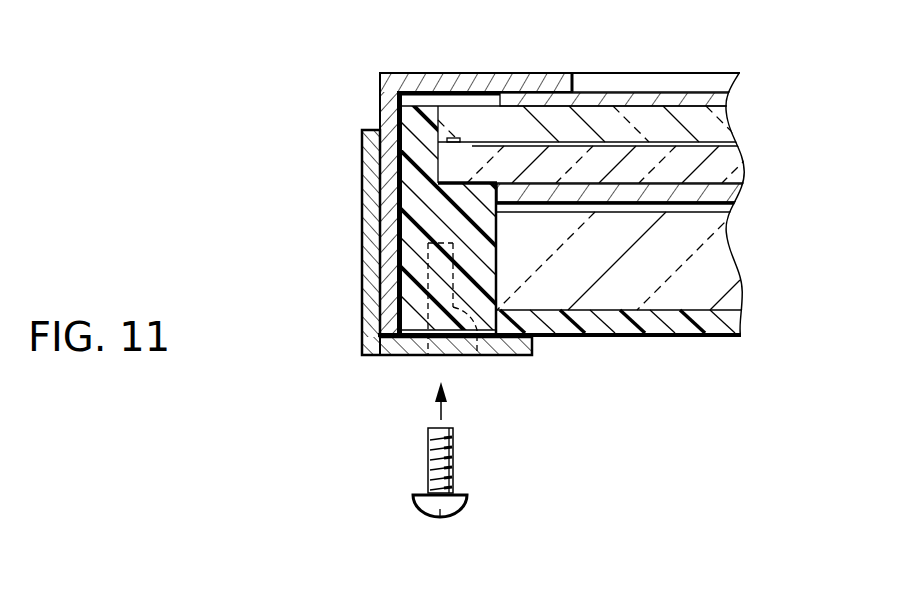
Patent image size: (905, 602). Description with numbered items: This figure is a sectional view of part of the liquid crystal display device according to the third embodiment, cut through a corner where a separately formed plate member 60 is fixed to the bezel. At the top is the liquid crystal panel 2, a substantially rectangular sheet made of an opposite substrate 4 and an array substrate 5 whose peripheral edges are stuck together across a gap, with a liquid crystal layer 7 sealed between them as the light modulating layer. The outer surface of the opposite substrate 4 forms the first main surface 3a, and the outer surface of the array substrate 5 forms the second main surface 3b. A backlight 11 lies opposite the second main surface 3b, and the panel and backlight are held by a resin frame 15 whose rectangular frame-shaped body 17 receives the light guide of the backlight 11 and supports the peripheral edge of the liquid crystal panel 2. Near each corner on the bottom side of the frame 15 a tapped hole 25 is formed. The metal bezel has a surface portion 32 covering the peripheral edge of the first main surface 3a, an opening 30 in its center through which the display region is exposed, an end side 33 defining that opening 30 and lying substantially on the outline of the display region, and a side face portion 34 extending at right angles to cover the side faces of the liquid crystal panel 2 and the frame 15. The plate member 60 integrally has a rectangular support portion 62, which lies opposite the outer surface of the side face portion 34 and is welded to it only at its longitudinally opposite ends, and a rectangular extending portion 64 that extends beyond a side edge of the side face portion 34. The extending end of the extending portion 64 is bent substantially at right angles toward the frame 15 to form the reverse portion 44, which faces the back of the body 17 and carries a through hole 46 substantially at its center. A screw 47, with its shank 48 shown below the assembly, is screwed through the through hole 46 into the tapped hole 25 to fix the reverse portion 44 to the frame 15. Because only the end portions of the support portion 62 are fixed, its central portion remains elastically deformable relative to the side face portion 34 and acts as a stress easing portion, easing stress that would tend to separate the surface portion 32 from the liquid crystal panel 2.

The liquid crystal panel 2 is at (680, 74).
The first main surface 3a is at (717, 96).
The second main surface 3b is at (683, 212).
The opposite substrate 4 is at (725, 121).
The array substrate 5 is at (740, 166).
The liquid crystal layer 7 is at (721, 138).
The backlight 11 is at (671, 300).
The frame 15 is at (591, 350).
The body 17 is at (418, 240).
The tapped hole 25 is at (483, 356).
The opening 30 is at (626, 84).
The surface portion 32 is at (446, 177).
The end side 33 is at (572, 74).
The side face portion 34 is at (380, 108).
The reverse portion 44 is at (515, 357).
The through hole 46 is at (440, 357).
The screw 47 is at (463, 509).
The screw shaft 48 is at (455, 465).
The plate member 60 is at (403, 273).
The support portion 62 is at (362, 158).
The extending portion 64 is at (362, 336).